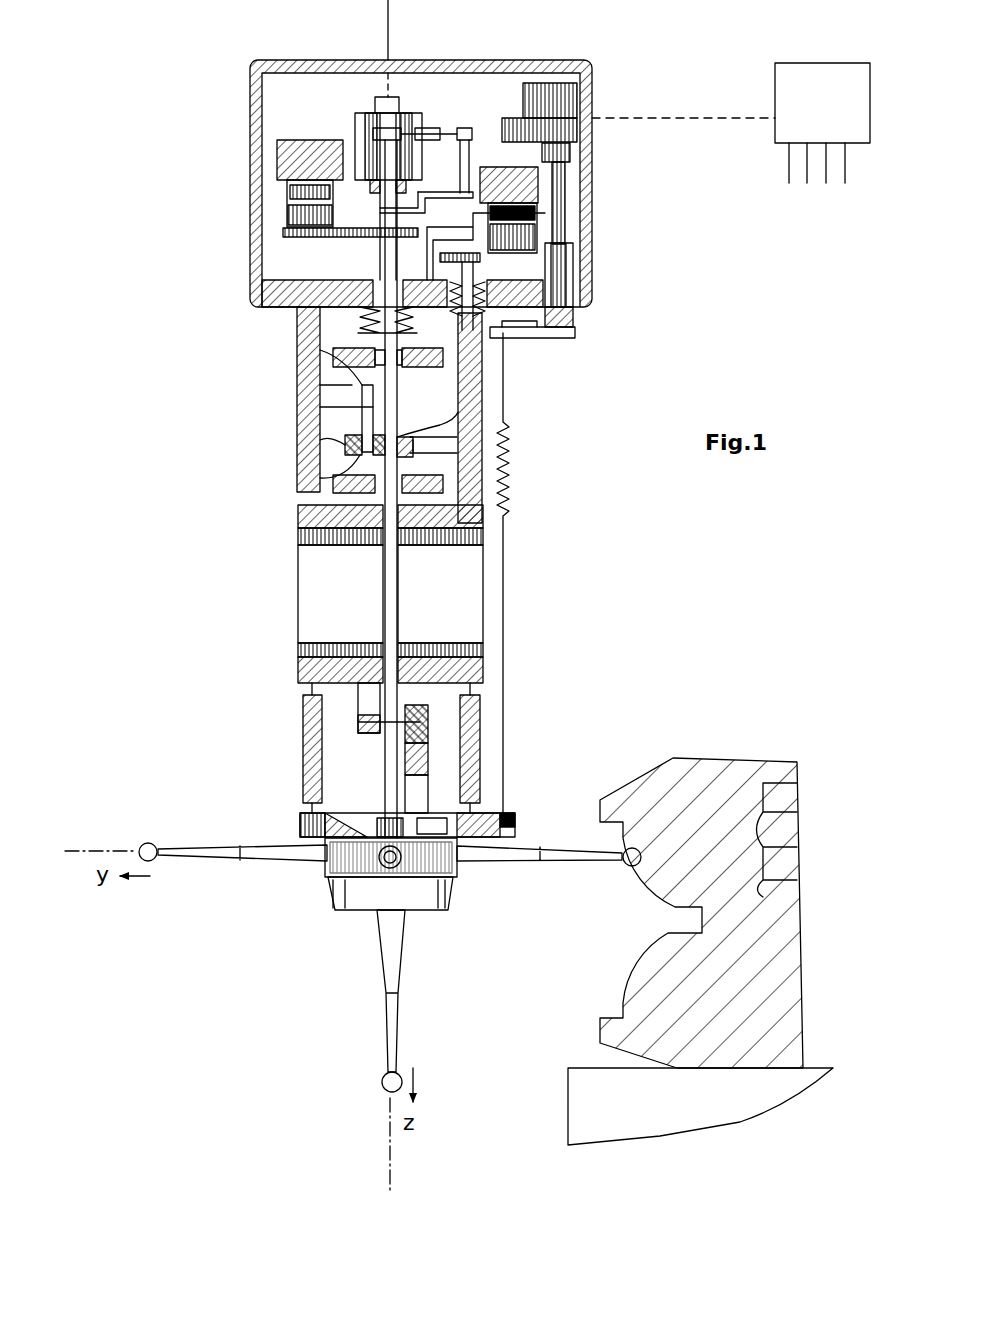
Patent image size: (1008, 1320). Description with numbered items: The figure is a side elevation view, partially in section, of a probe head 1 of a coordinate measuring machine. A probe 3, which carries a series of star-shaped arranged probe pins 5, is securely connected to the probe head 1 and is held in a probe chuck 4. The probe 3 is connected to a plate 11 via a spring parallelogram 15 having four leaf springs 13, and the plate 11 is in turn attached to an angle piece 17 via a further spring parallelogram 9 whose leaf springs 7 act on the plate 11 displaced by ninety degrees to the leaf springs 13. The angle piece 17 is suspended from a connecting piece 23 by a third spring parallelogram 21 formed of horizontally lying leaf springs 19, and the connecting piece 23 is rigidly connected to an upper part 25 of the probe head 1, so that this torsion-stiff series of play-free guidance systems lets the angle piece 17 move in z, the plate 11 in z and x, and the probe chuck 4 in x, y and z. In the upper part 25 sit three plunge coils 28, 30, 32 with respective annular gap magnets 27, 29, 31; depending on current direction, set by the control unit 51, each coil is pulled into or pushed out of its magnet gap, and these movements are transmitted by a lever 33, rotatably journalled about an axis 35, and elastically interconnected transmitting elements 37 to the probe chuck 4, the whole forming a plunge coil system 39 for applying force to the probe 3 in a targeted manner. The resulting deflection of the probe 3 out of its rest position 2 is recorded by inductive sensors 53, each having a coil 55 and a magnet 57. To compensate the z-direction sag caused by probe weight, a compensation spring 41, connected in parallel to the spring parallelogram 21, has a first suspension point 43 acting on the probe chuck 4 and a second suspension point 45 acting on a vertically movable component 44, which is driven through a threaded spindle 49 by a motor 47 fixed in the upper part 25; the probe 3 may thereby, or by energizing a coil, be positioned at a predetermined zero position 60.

The probe head 1 is at (277, 385).
The rest position 2 is at (392, 1156).
The probe 3 is at (367, 957).
The probe chuck 4 is at (335, 898).
The probe pins 5 is at (250, 856).
The leaf springs 7 is at (298, 652).
The spring parallelogram 9 is at (483, 650).
The plate 11 is at (298, 672).
The leaf springs 13 is at (303, 806).
The spring parallelogram 15 is at (298, 688).
The angle piece 17 is at (482, 383).
The leaf springs 19 is at (428, 447).
The spring parallelogram 21 is at (462, 355).
The connecting piece 23 is at (297, 325).
The upper part 25 is at (667, 174).
The annular gap magnet 27 is at (355, 130).
The plunge coil 28 is at (418, 195).
The annular gap magnet 29 is at (300, 140).
The plunge coil 30 is at (290, 200).
The annular gap magnet 31 is at (500, 167).
The plunge coil 32 is at (530, 210).
The lever 33 is at (325, 237).
The axis 35 is at (388, 33).
The transmitting elements 37 is at (420, 128).
The plunge coil system 39 is at (358, 98).
The compensation spring 41 is at (512, 462).
The first suspension point 43 is at (507, 813).
The vertically movable component 44 is at (575, 333).
The second suspension point 45 is at (510, 322).
The motor 47 is at (570, 102).
The threaded spindle 49 is at (562, 205).
The control unit 51 is at (833, 76).
The sensors 53 is at (355, 437).
The coil 55 is at (300, 478).
The magnet 57 is at (362, 422).
The zero position 60 is at (80, 840).